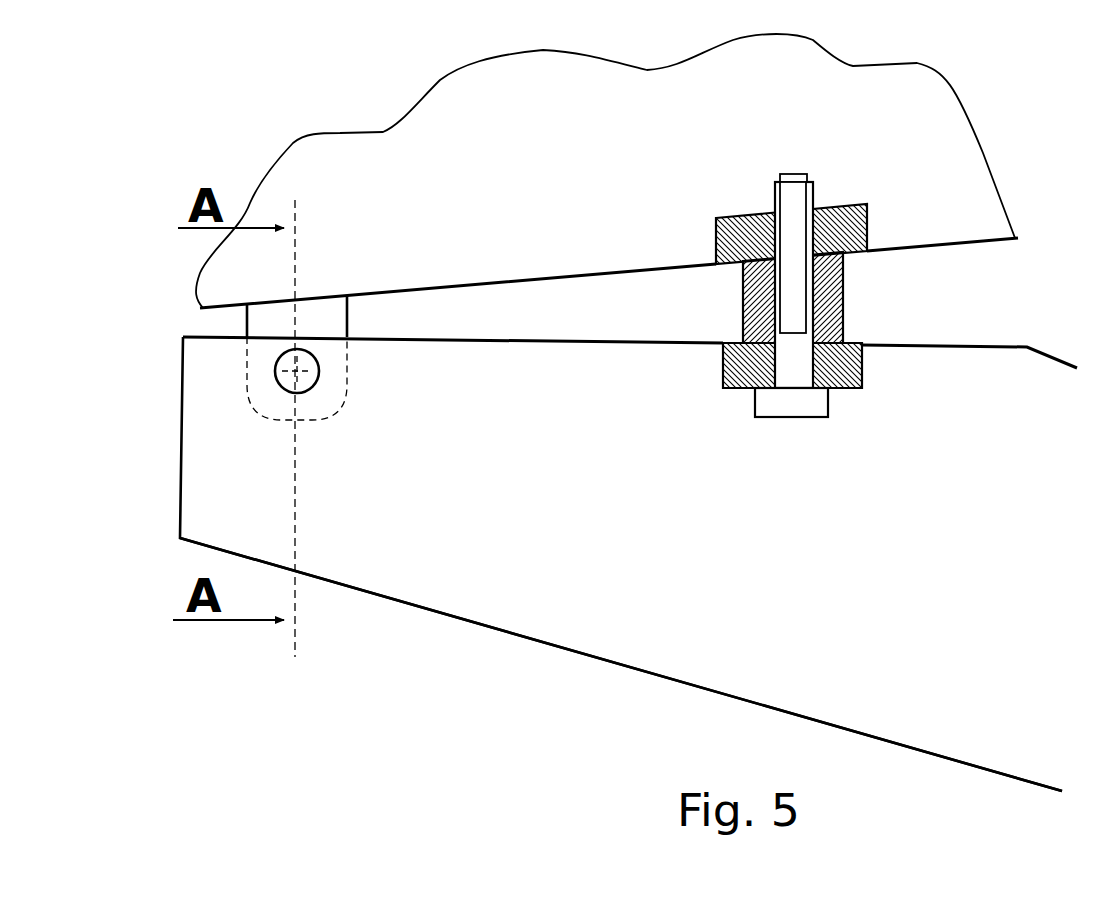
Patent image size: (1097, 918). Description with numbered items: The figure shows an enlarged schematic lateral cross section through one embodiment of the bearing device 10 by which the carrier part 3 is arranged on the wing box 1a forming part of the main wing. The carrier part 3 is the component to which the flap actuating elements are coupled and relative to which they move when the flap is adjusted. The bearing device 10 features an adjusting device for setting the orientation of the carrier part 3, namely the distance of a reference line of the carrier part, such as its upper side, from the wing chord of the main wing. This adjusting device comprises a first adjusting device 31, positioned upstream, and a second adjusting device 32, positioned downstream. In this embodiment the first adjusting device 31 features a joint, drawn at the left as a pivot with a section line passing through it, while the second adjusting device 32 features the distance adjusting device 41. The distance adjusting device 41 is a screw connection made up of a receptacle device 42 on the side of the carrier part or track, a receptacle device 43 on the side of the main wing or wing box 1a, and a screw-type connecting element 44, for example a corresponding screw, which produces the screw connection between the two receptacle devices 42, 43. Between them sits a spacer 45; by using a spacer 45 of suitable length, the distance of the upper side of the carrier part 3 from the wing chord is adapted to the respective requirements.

The wing box 1a is at (365, 163).
The carrier part 3 is at (700, 603).
The bearing device 10 is at (892, 437).
The first adjusting device 31 is at (350, 423).
The second adjusting device 32 is at (680, 391).
The distance adjusting device 41 is at (783, 150).
The receptacle device 42 is at (730, 387).
The receptacle device 43 is at (726, 228).
The screw-type connecting element 44 is at (790, 357).
The spacer 45 is at (793, 297).